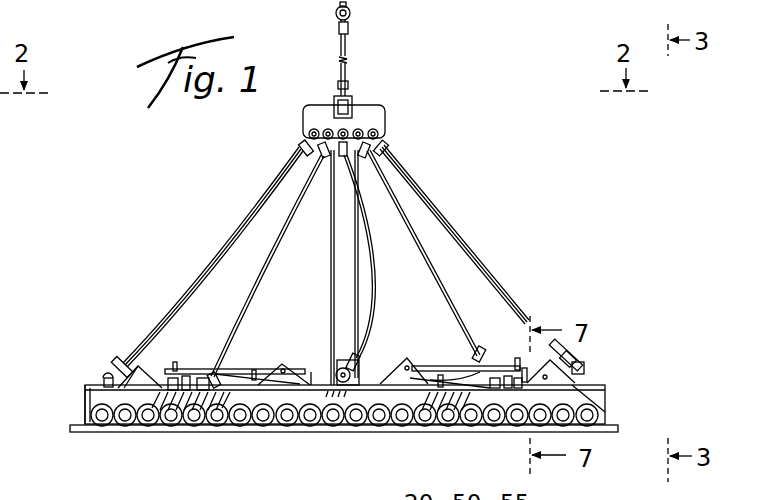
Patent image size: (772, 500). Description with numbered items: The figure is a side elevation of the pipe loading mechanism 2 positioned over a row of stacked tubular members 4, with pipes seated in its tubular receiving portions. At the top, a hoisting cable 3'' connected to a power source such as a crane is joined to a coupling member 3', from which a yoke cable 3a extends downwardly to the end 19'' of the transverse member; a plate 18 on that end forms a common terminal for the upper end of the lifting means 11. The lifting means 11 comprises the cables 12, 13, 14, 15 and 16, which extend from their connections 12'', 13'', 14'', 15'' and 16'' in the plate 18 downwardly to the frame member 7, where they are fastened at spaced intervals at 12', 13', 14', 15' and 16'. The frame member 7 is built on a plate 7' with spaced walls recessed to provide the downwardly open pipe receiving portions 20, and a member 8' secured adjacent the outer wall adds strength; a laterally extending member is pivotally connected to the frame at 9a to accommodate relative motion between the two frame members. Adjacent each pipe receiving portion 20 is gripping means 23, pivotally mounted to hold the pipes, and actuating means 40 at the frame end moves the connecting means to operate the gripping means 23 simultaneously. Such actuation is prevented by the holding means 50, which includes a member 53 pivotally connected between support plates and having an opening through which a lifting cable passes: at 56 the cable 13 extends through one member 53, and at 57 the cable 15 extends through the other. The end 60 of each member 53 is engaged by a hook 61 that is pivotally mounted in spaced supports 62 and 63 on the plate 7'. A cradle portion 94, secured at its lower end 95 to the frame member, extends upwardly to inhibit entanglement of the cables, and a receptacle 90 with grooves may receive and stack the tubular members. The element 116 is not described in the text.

The pipe loading mechanism 2 is at (506, 215).
The hoisting cable 3'' is at (365, 18).
The coupling member 3' is at (364, 40).
The yoke cable 3a is at (349, 72).
The end of transverse member 19'' is at (376, 99).
The plate 18 is at (386, 122).
The connection of cable 13 13'' is at (315, 108).
The connection of cable 15 15'' is at (412, 108).
The connection of cable 12 12'' is at (301, 140).
The connection of cable 16 16'' is at (417, 150).
The connection of cable 14 14'' is at (325, 168).
The lifting means 11 is at (210, 252).
The cable sheath 116 is at (180, 300).
The cable 12 is at (213, 257).
The cable 13 is at (267, 266).
The cradle portion 94 is at (331, 284).
The cable 14 is at (381, 264).
The cable 15 is at (427, 253).
The cable 16 is at (465, 234).
The connection of cable 12 to frame member 12' is at (112, 357).
The end of holding member 60 is at (140, 388).
The hook 61 is at (172, 371).
The passage of cable 13 through holding member 56 is at (205, 368).
The holding member 53 is at (232, 378).
The connection of cable 13 to frame member 13' is at (246, 369).
The holding means 50 is at (284, 364).
The plate 7' is at (318, 364).
The connection of cable 14 to frame member 14' is at (366, 366).
The passage of cable 15 through holding member 57 is at (483, 368).
The connection of cable 15 to frame member 15' is at (468, 362).
The lower end of cradle portion 95 is at (476, 390).
The connection of cable 16 to frame member 16' is at (582, 361).
The frame member 7 is at (603, 398).
The strengthening member 8' is at (329, 404).
The row of stacked tubular members 4 is at (97, 434).
The actuating means 40 is at (101, 378).
The pipe receiving portion 20 is at (200, 430).
The hook support 62 is at (143, 432).
The hook support 63 is at (170, 432).
The pivotal connection 9a is at (230, 432).
The receptacle 90 is at (298, 430).
The gripping means 23 is at (460, 430).